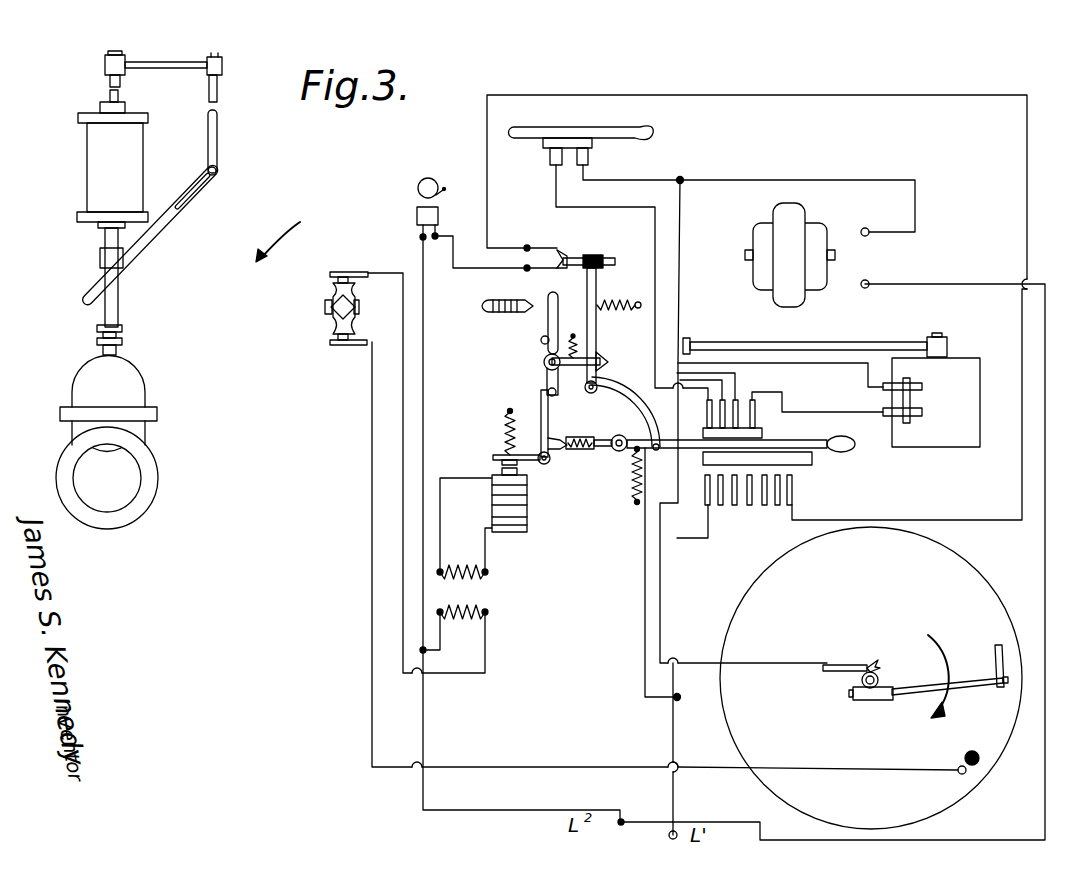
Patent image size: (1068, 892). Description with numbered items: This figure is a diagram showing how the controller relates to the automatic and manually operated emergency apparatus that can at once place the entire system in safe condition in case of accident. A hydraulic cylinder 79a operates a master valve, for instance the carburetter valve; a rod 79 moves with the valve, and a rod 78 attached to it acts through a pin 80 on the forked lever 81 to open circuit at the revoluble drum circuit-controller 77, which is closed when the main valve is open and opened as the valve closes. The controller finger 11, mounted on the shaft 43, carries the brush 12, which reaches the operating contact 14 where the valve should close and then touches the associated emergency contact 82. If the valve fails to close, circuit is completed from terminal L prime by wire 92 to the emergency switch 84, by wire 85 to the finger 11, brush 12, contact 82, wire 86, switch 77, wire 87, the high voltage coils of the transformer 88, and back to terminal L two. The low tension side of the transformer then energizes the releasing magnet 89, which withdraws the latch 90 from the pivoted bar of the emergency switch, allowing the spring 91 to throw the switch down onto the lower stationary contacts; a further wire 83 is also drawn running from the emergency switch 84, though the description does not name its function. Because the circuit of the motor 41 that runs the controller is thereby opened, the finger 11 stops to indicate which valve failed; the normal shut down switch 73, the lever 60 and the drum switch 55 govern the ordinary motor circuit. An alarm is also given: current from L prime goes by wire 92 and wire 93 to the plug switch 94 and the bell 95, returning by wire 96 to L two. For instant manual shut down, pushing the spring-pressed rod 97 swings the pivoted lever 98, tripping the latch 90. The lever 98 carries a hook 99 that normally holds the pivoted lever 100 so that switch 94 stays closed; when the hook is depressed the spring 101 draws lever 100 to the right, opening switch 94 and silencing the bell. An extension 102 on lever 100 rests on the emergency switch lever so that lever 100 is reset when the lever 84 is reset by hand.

The rod 79 is at (110, 77).
The hydraulic cylinder 79a is at (95, 178).
The rod 78 is at (218, 137).
The pin 80 is at (218, 170).
The forked lever 81 is at (249, 218).
The revoluble drum circuit-controller 77 is at (326, 310).
The bell 95 is at (414, 211).
The wire 96 is at (400, 386).
The wire 86 is at (372, 402).
The wire 87 is at (400, 452).
The transformer 88 is at (470, 606).
The releasing magnet 89 is at (495, 500).
The wire 93 is at (487, 185).
The normal shut down switch 73 is at (578, 130).
The electric motor 41 is at (800, 222).
The plug switch 94 is at (570, 262).
The pivoted lever 100 is at (592, 320).
The spring 101 is at (640, 305).
The hook 99 is at (602, 360).
The pivoted lever 98 is at (547, 323).
The spring-pressed rod 97 is at (522, 306).
The latch 90 is at (540, 407).
The extension 102 is at (613, 414).
The spring 91 is at (632, 462).
The emergency switch 84 is at (765, 440).
The lever 60 is at (842, 347).
The revoluble drum switch 55 is at (967, 375).
The wire 83 is at (645, 562).
The wire 85 is at (660, 607).
The wire 92 is at (673, 740).
The controller finger 11 is at (913, 685).
The brush 12 is at (1000, 645).
The shaft 43 is at (867, 665).
The operating contact 14 is at (976, 750).
The emergency contact 82 is at (958, 773).